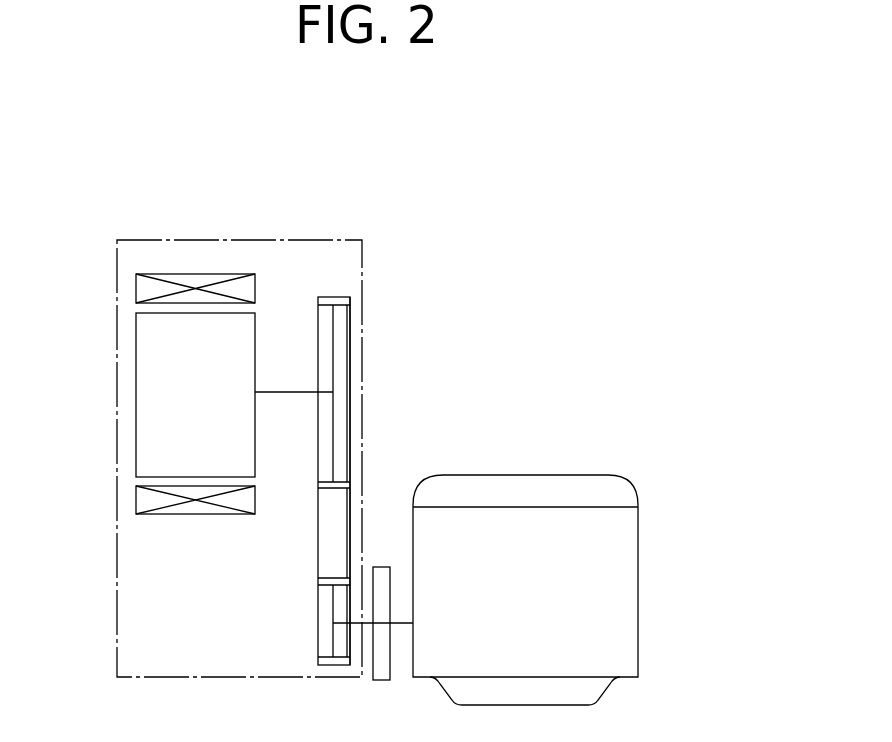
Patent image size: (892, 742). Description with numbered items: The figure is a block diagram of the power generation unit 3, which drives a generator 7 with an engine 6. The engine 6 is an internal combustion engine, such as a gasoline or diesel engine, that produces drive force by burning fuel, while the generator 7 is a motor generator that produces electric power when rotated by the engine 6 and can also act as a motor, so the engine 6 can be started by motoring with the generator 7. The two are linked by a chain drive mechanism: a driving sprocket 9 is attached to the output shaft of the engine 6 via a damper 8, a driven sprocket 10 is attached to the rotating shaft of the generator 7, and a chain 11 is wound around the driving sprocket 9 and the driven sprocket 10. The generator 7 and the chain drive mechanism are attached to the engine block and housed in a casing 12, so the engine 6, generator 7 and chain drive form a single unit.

The power generation unit 3 is at (533, 341).
The engine 6 is at (638, 594).
The generator 7 is at (136, 405).
The damper 8 is at (382, 681).
The driving sprocket 9 is at (330, 666).
The driven sprocket 10 is at (370, 505).
The chain 11 is at (350, 362).
The casing 12 is at (240, 240).